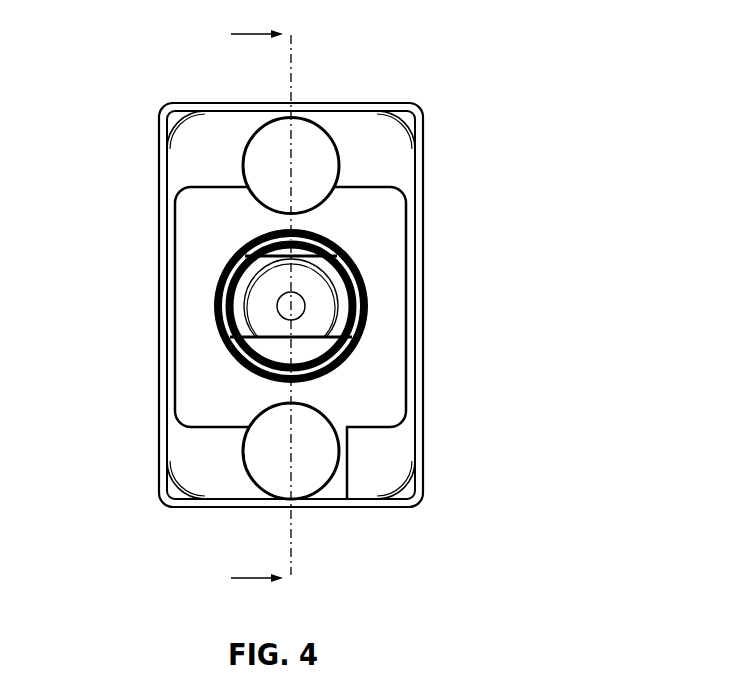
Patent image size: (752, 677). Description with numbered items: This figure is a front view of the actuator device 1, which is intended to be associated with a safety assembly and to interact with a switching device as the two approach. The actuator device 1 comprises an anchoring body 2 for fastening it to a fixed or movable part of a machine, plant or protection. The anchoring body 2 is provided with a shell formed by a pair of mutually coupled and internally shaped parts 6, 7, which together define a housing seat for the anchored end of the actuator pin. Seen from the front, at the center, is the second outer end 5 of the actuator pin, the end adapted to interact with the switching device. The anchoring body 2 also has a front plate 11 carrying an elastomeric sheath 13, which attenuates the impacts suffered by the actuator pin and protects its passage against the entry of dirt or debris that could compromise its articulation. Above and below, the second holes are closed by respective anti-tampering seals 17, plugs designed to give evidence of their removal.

The actuator device 1 is at (372, 304).
The anchoring body 2 is at (136, 109).
The second outer end 5 is at (258, 297).
The shell part 6 is at (181, 452).
The shell part 7 is at (385, 150).
The front plate 11 is at (385, 397).
The elastomeric sheath 13 is at (247, 240).
The anti-tampering seal 17 is at (310, 140).